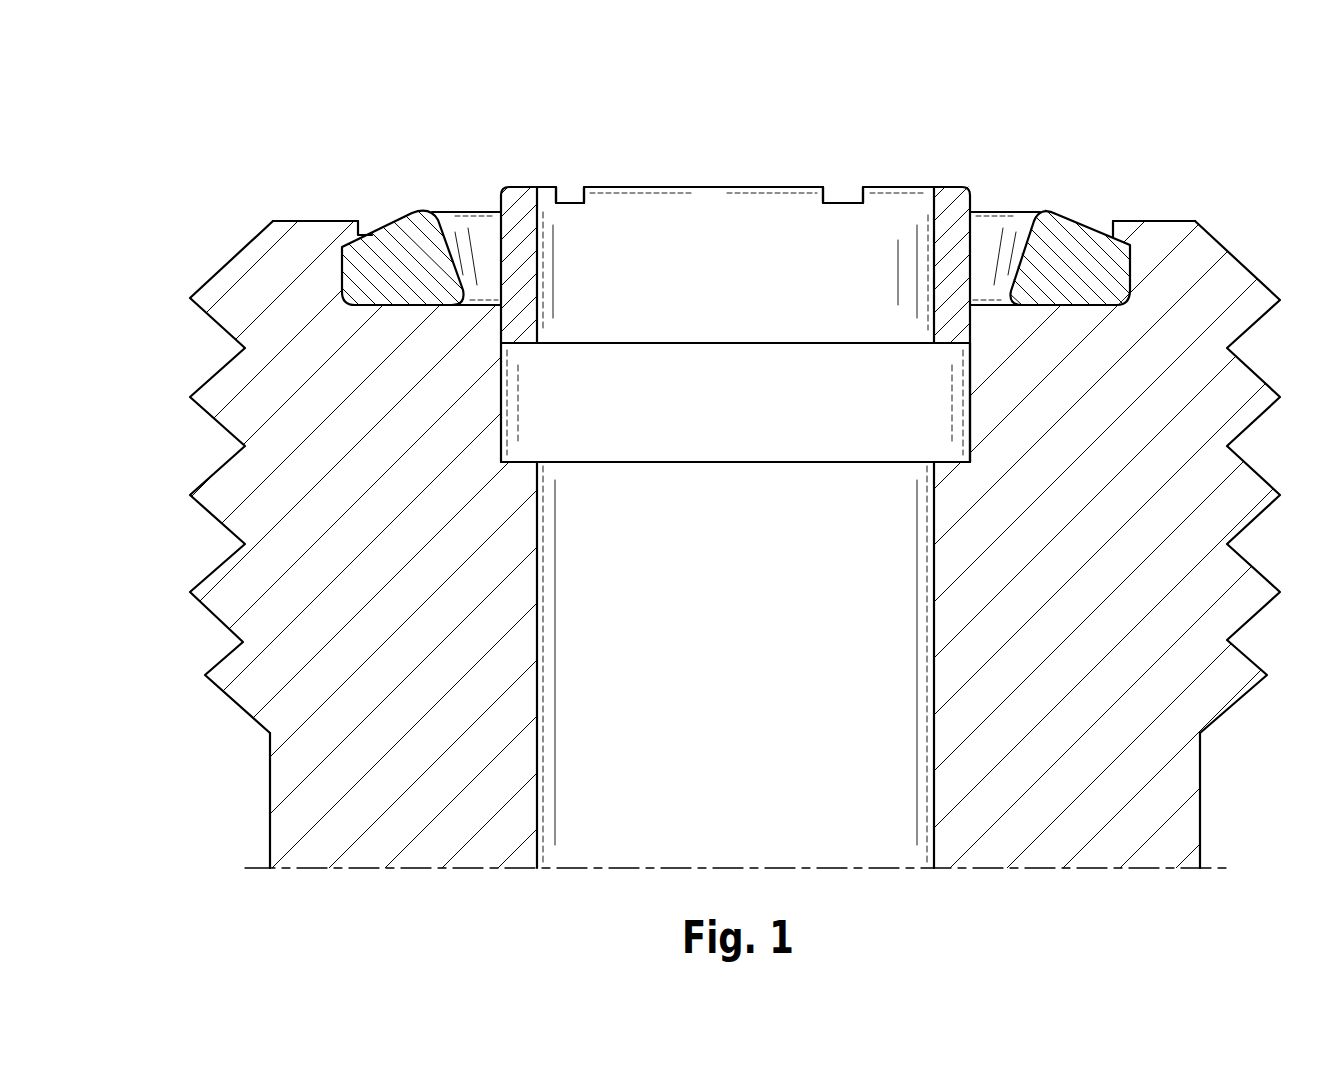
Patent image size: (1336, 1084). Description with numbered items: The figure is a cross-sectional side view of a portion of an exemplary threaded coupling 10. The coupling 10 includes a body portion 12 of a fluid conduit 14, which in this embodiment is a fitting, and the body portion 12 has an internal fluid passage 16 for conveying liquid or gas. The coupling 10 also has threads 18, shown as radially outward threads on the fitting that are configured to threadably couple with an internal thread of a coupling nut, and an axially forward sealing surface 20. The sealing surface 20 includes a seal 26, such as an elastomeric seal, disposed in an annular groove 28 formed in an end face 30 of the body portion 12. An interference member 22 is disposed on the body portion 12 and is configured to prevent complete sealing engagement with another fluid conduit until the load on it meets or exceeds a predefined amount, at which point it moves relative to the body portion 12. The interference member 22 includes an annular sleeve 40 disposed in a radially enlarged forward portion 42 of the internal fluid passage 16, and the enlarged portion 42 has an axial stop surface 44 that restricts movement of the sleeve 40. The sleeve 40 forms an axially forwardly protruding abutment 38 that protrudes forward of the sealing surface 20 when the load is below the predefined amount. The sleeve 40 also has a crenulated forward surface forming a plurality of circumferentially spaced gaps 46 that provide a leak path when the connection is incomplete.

The threaded coupling 10 is at (220, 122).
The body portion 12 is at (268, 293).
The fluid conduit 14 is at (1197, 216).
The internal fluid passage 16 is at (871, 845).
The threads 18 is at (210, 378).
The axially forward sealing surface 20 is at (1042, 205).
The interference member 22 is at (490, 183).
The seal 26 is at (1082, 265).
The annular groove 28 is at (992, 262).
The end face 30 is at (322, 220).
The axially forwardly protruding abutment 38 is at (952, 190).
The annular sleeve 40 is at (517, 203).
The radially enlarged forward portion 42 is at (963, 398).
The axial stop surface 44 is at (947, 460).
The gaps 46 is at (567, 197).